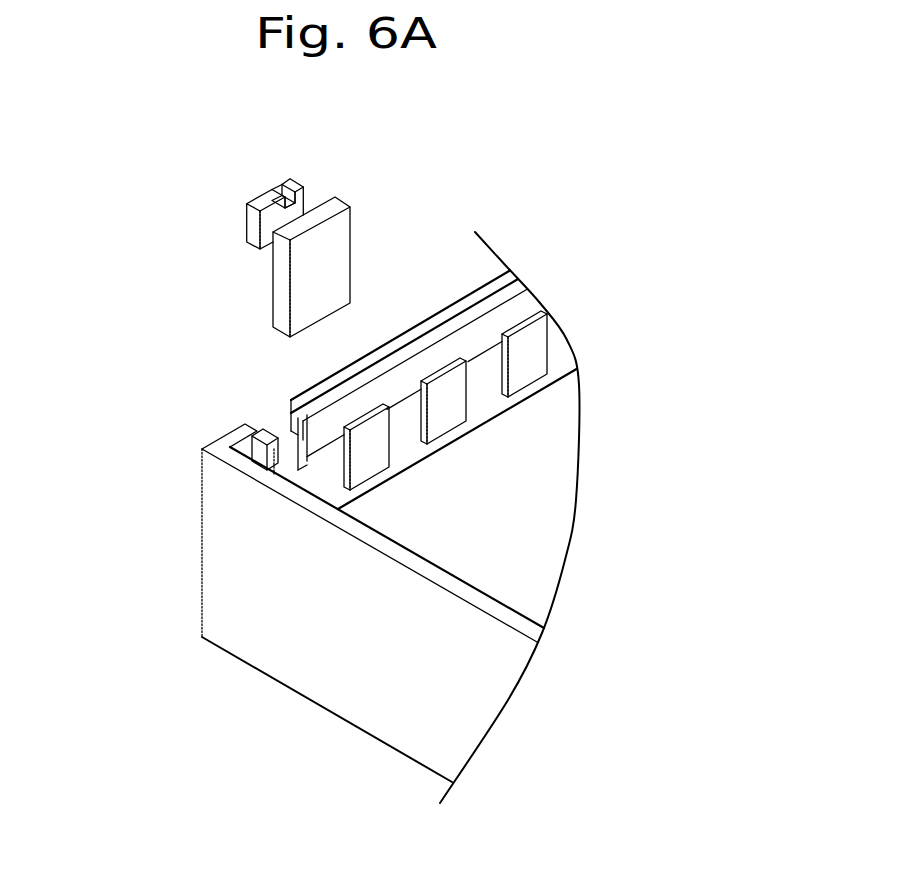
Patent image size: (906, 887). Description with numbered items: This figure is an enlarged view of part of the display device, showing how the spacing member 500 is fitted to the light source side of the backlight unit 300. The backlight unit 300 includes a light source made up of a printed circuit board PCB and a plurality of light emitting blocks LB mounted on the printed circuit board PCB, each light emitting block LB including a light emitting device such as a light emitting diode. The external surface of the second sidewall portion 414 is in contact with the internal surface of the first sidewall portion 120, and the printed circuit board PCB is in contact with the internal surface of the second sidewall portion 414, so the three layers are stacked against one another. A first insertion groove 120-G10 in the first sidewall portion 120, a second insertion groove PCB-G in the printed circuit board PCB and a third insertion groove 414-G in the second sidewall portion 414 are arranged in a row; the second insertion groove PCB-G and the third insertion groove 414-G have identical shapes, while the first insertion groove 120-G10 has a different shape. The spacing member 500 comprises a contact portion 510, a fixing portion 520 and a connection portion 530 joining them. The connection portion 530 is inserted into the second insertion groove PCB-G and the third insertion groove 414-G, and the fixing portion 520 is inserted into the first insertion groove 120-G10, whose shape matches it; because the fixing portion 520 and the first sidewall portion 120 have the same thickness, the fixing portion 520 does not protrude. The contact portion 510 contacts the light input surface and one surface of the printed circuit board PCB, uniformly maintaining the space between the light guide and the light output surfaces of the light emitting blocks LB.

The spacing member 500 is at (346, 184).
The contact portion 510 is at (280, 288).
The fixing portion 520 is at (250, 214).
The connection portion 530 is at (292, 207).
The first sidewall portion 120 is at (502, 282).
The second sidewall portion 414 is at (524, 294).
The printed circuit board PCB is at (539, 306).
The light emitting blocks LB is at (539, 346).
The backlight unit 300 is at (652, 257).
The first insertion groove 120-G10 is at (298, 401).
The third insertion groove 414-G is at (300, 417).
The second insertion groove PCB-G is at (296, 427).